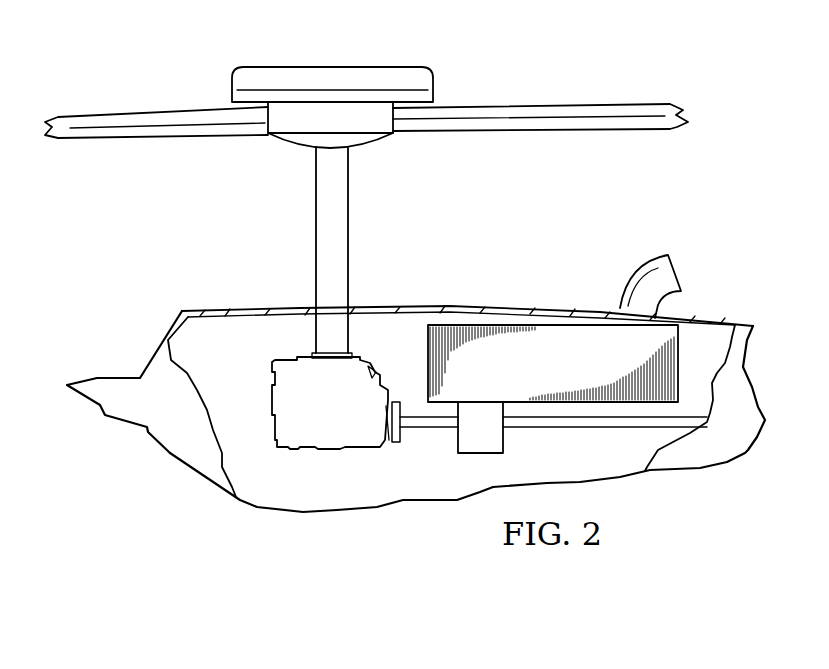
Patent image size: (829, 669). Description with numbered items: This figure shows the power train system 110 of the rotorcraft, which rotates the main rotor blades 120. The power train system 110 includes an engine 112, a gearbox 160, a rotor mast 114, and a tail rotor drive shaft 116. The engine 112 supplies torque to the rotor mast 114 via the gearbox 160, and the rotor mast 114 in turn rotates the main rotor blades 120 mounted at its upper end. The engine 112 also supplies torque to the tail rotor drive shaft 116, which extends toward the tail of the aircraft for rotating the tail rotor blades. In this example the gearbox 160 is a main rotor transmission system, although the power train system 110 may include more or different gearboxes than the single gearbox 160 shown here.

The power train system 110 is at (302, 56).
The main rotor blades 120 is at (575, 105).
The rotor mast 114 is at (316, 198).
The engine 112 is at (537, 374).
The tail rotor drive shaft 116 is at (571, 423).
The gearbox 160 is at (316, 410).